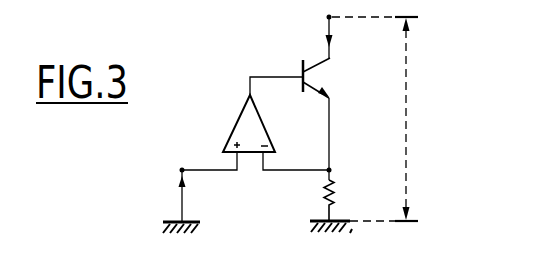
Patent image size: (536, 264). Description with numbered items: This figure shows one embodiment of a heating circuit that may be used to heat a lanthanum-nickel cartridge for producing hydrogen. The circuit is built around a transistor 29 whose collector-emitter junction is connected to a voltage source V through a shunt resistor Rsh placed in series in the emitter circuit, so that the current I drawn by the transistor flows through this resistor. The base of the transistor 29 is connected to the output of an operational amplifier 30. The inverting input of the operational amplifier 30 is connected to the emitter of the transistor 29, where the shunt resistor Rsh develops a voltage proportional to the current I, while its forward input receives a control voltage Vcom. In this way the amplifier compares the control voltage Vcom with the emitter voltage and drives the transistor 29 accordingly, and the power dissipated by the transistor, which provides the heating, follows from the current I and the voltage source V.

The transistor 29 is at (284, 67).
The operational amplifier 30 is at (244, 122).
The shunt resistor Rsh is at (318, 206).
The control voltage Vcom is at (163, 201).
The current I is at (322, 40).
The voltage source V is at (378, 119).